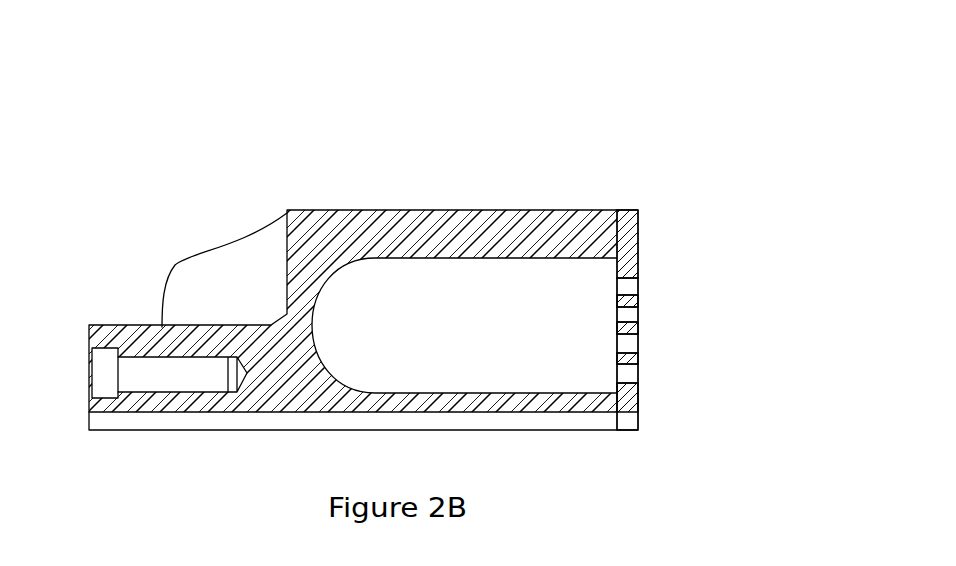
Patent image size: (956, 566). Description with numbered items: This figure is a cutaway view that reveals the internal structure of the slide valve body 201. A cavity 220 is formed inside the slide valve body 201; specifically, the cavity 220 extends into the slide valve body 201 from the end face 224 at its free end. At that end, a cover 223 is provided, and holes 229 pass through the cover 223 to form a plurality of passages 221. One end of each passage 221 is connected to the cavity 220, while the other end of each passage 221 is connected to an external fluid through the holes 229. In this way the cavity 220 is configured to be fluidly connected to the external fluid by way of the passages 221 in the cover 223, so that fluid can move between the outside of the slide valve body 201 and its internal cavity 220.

The slide valve body 201 is at (166, 181).
The cavity 220 is at (487, 287).
The cover 223 is at (640, 212).
The passages 221 is at (622, 313).
The holes 229 is at (638, 375).
The end face 224 is at (638, 397).